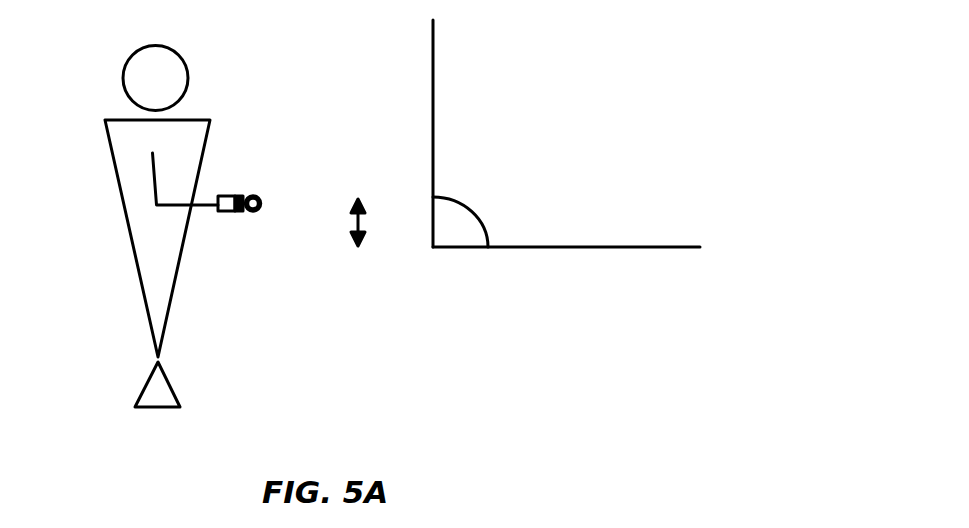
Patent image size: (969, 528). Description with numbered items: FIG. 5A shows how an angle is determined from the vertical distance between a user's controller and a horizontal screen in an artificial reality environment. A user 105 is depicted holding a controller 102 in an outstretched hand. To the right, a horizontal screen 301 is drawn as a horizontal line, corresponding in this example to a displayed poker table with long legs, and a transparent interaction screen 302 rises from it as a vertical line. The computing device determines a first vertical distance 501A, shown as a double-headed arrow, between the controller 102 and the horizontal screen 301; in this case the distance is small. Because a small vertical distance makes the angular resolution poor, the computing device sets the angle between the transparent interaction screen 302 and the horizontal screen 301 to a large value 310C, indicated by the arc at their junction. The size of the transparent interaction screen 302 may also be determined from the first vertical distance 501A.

The user 105 is at (140, 277).
The controller 102 is at (233, 196).
The first vertical distance 501A is at (355, 225).
The transparent interaction screen 302 is at (432, 65).
The horizontal screen 301 is at (587, 250).
The angle value 310C is at (478, 215).